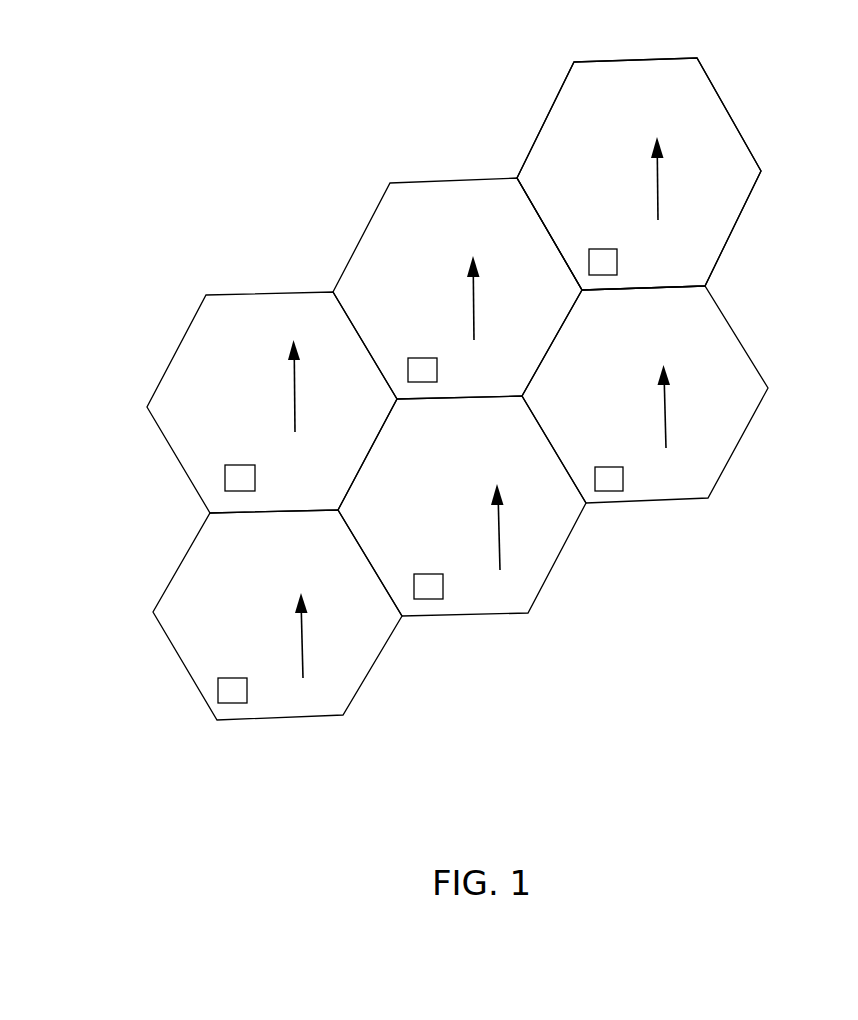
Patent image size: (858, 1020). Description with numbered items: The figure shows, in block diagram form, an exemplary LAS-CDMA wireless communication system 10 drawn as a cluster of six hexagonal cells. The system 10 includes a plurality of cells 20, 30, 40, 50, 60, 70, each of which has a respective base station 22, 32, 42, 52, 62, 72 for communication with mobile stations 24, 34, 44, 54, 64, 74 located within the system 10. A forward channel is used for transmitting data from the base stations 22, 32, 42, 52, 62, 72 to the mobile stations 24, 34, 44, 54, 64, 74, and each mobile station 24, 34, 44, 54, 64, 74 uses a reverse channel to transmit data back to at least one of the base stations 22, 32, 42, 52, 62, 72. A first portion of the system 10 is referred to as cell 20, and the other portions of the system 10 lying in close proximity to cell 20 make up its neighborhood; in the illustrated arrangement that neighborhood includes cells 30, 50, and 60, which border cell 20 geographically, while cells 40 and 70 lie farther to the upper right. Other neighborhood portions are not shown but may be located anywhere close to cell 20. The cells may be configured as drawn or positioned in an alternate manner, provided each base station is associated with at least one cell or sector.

The system 10 is at (128, 101).
The cell 20 is at (249, 330).
The base station 22 is at (295, 402).
The mobile station 24 is at (237, 465).
The cell 30 is at (430, 217).
The base station 32 is at (475, 310).
The mobile station 34 is at (420, 358).
The cell 40 is at (612, 97).
The base station 42 is at (658, 187).
The mobile station 44 is at (605, 249).
The cell 50 is at (255, 556).
The base station 52 is at (303, 647).
The mobile station 54 is at (232, 678).
The cell 60 is at (440, 440).
The base station 62 is at (500, 539).
The mobile station 64 is at (427, 574).
The cell 70 is at (619, 326).
The base station 72 is at (666, 417).
The mobile station 74 is at (609, 467).